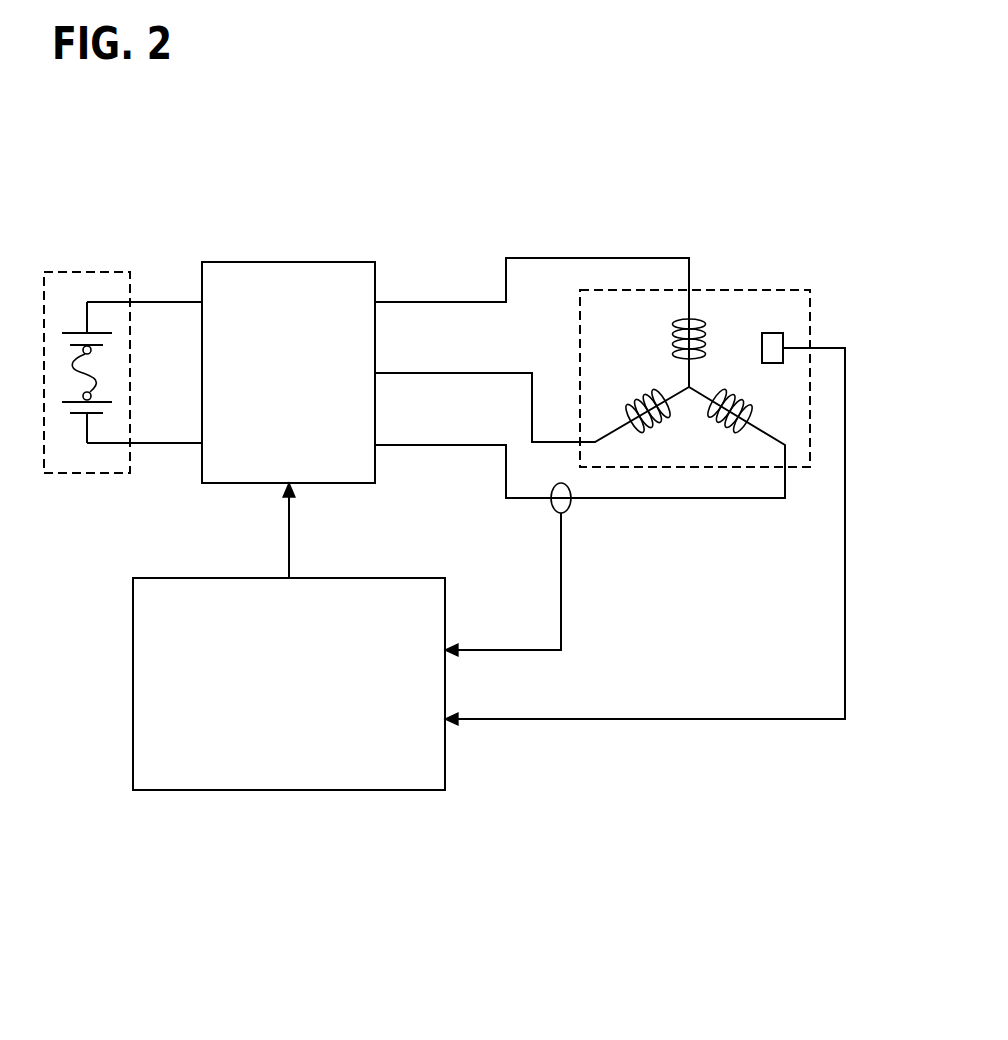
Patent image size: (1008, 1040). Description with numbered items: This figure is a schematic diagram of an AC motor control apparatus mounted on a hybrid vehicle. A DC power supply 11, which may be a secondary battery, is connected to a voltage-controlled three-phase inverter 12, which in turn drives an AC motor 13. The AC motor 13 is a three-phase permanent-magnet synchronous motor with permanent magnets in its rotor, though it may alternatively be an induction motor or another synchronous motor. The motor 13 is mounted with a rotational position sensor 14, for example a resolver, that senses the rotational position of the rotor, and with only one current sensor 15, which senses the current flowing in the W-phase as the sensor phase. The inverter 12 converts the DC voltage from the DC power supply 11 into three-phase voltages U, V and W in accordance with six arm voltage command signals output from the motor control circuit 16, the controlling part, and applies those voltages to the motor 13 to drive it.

The DC power supply 11 is at (82, 270).
The inverter 12 is at (292, 262).
The AC motor 13 is at (760, 288).
The rotational position sensor 14 is at (773, 333).
The current sensor 15 is at (568, 510).
The motor control circuit 16 is at (286, 791).